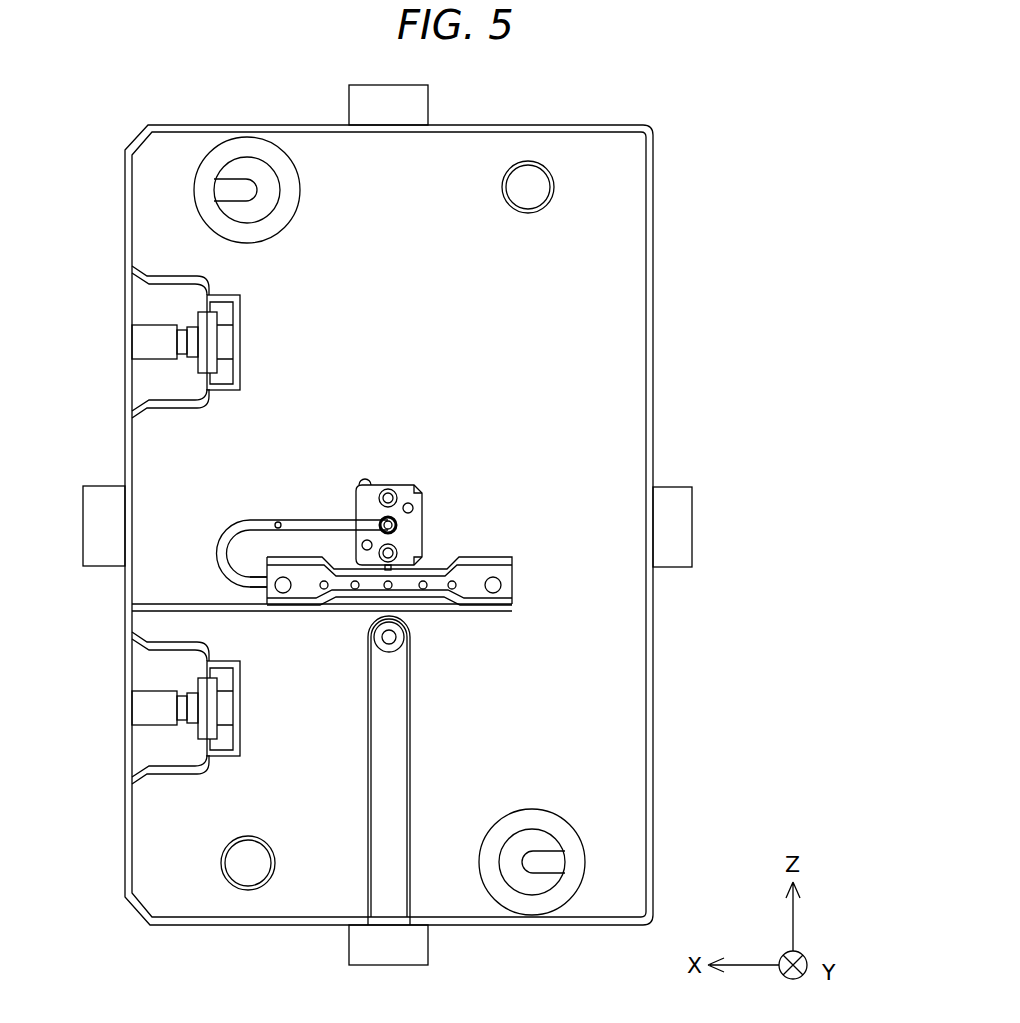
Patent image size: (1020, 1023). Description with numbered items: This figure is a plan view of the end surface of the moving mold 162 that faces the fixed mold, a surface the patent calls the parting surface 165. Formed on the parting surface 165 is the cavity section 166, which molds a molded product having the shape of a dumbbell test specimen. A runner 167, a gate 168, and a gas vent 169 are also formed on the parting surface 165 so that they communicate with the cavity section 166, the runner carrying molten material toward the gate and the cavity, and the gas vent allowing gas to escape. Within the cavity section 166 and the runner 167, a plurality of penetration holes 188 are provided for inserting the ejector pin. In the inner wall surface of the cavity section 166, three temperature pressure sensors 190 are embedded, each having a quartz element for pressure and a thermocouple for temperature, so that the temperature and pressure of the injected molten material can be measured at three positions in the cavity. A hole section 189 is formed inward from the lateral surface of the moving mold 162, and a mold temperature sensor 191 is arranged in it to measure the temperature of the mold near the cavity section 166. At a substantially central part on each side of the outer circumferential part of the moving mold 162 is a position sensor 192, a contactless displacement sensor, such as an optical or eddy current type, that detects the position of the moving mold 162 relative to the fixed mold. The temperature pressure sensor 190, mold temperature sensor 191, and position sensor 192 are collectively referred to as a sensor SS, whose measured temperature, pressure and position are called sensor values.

The moving mold 162 is at (653, 193).
The parting surface 165 is at (625, 262).
The cavity section 166 is at (302, 583).
The runner 167 is at (315, 522).
The gate 168 is at (265, 590).
The gas vent 169 is at (160, 604).
The penetration holes 188 is at (283, 593).
The hole section 189 is at (398, 878).
The temperature pressure sensor 190 is at (324, 590).
The mold temperature sensor 191 is at (392, 652).
The position sensor 192 is at (430, 100).